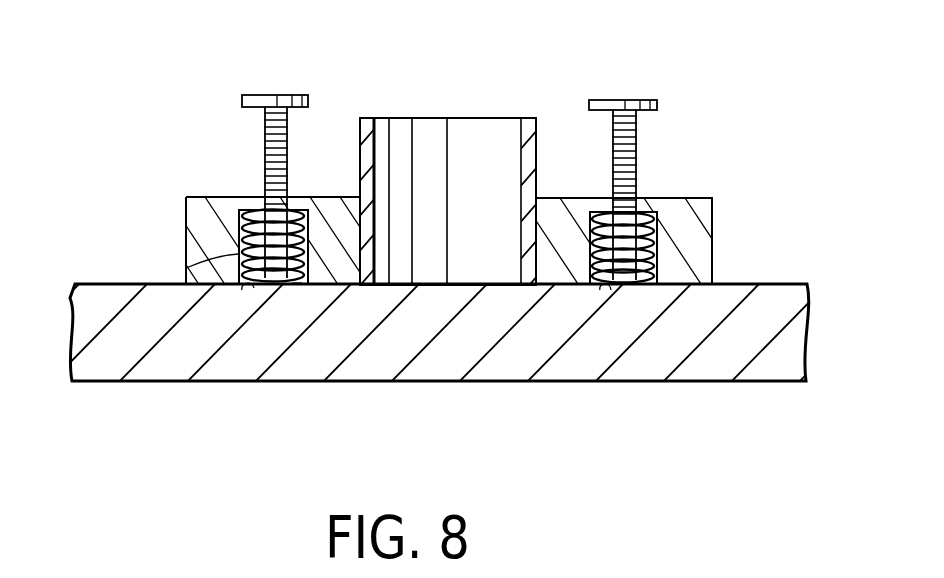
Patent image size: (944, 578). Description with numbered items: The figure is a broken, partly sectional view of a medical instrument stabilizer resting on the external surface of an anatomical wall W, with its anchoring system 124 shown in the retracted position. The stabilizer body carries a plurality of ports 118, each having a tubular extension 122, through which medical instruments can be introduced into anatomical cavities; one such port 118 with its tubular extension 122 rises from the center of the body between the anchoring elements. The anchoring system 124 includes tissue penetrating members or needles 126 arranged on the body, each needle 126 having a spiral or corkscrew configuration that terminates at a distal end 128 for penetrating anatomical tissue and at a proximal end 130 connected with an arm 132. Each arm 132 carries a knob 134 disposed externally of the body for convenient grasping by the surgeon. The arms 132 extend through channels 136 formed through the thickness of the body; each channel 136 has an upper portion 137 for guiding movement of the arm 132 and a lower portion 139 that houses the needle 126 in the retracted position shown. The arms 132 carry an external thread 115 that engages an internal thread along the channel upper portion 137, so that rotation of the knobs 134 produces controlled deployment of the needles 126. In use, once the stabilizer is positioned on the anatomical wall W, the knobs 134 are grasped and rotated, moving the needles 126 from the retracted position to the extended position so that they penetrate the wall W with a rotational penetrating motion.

The external thread 115 is at (287, 137).
The port 118 is at (476, 156).
The tubular extension 122 is at (538, 149).
The anchoring system 124 is at (176, 249).
The needle 126 is at (283, 285).
The distal end 128 is at (248, 286).
The proximal end 130 is at (300, 207).
The arm 132 is at (263, 125).
The knob 134 is at (259, 95).
The channel 136 is at (297, 287).
The upper portion 137 is at (172, 163).
The lower portion 139 is at (186, 268).
The anatomical wall W is at (762, 360).